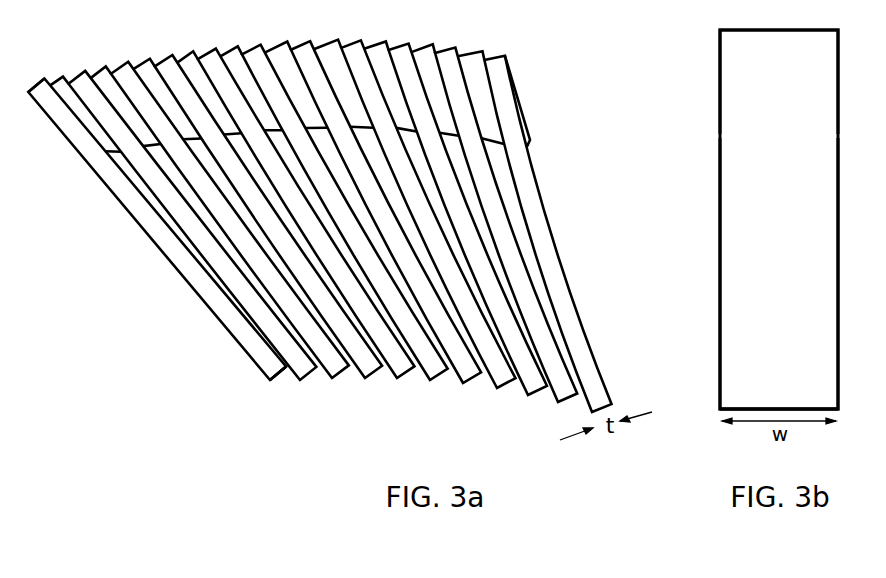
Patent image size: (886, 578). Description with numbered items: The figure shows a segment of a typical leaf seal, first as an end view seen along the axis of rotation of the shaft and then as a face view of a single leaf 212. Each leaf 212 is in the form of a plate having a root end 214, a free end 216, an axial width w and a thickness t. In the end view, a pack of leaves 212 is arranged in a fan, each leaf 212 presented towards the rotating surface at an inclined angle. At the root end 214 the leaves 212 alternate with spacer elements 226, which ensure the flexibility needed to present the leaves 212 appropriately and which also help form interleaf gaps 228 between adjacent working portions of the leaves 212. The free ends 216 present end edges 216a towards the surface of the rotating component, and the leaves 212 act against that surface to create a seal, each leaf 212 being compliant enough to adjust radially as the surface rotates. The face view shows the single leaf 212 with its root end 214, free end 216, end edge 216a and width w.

In FIG. 3a, the leaf 212 is at (130, 212).
In FIG. 3b, the leaf 212 is at (778, 207).
In FIG. 3a, the root end 214 is at (80, 140).
In FIG. 3b, the root end 214 is at (712, 32).
In FIG. 3a, the free end 216 is at (185, 268).
In FIG. 3b, the free end 216 is at (712, 138).
In FIG. 3a, the end edge 216a is at (280, 352).
In FIG. 3b, the end edge 216a is at (754, 412).
In FIG. 3a, the spacer element 226 is at (58, 87).
In FIG. 3a, the interleaf gap 228 is at (495, 160).